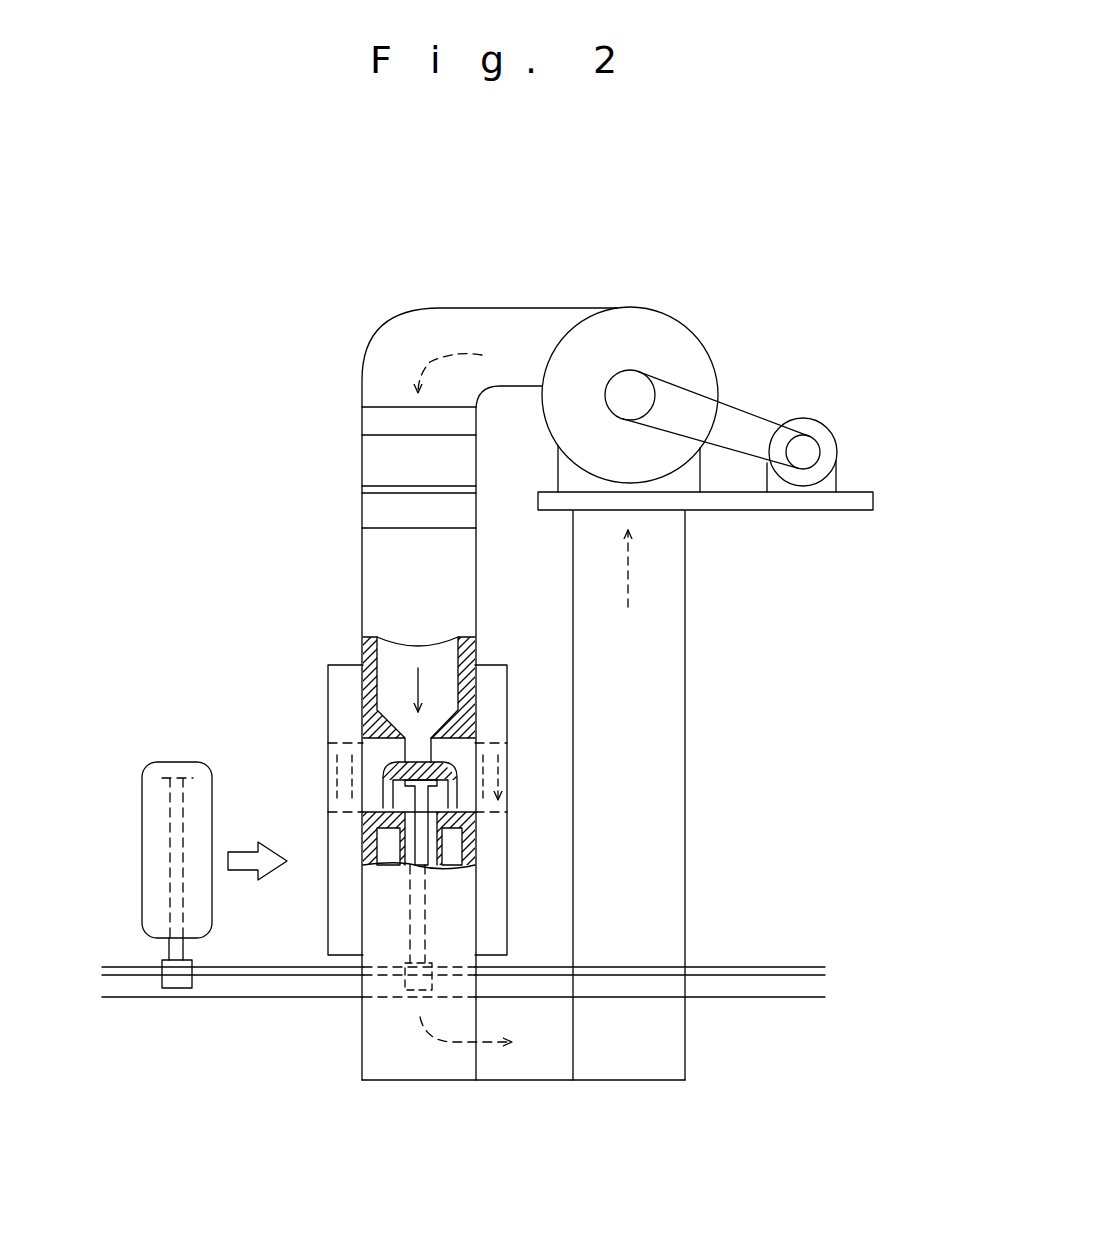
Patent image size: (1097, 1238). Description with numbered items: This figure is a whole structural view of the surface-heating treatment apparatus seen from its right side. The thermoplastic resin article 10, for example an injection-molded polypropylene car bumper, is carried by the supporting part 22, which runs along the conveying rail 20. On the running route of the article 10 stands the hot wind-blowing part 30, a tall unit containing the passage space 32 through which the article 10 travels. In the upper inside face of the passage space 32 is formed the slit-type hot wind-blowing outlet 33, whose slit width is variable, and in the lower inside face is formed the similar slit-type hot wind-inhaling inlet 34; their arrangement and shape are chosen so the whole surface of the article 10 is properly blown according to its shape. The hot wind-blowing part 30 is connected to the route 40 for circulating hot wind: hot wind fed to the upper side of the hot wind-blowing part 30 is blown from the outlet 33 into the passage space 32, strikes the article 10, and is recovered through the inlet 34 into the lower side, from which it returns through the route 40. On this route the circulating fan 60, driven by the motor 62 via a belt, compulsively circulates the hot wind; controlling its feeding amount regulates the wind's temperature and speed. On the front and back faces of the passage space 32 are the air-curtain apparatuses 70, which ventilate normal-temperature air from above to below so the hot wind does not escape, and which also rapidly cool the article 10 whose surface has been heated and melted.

The article 10 is at (155, 808).
The conveying rail 20 is at (270, 985).
The supporting part 22 is at (162, 960).
The hot wind-blowing part 30 is at (362, 578).
The passage space 32 is at (385, 783).
The hot wind-blowing outlet 33 is at (417, 745).
The hot wind-inhaling inlet 34 is at (392, 830).
The route to circulate a hot wind 40 is at (657, 705).
The circulating fan 60 is at (653, 307).
The motor 62 is at (807, 435).
The air-curtain apparatus 70 is at (343, 705).